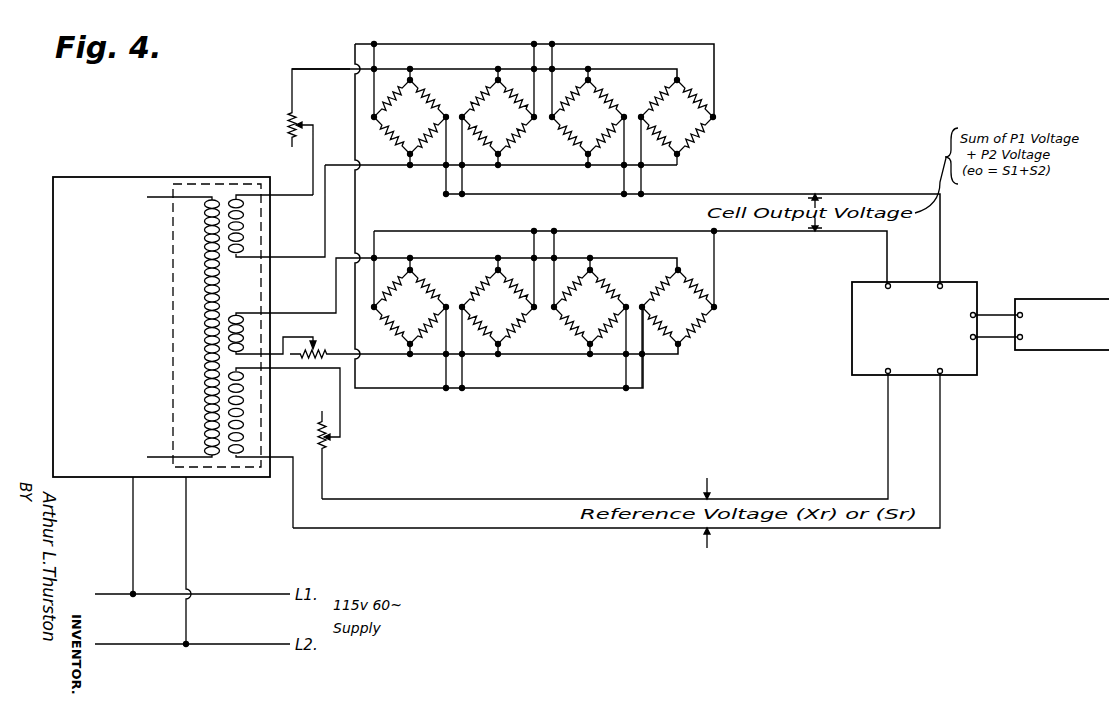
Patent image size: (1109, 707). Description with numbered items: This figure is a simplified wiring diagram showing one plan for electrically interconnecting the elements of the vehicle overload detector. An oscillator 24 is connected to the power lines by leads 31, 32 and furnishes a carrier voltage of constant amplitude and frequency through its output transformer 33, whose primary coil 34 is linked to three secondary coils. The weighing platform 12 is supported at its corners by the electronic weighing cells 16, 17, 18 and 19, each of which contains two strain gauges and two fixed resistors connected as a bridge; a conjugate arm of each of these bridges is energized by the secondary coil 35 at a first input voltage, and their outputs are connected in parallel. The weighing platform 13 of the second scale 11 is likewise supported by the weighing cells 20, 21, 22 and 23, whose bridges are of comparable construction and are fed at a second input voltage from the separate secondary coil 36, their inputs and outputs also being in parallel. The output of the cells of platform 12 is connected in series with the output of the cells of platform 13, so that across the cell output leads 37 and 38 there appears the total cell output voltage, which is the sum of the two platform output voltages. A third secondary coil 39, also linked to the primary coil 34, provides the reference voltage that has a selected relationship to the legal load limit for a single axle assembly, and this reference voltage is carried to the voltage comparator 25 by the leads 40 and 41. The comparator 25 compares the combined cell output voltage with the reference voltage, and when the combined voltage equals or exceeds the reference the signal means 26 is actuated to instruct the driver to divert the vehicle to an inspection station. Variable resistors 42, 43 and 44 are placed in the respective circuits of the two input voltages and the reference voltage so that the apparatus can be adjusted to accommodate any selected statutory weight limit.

The electronic scale 11 is at (858, 72).
The weighing platform 12 is at (778, 392).
The weighing platform 13 is at (537, 119).
The weighing cell 16 is at (395, 333).
The weighing cell 17 is at (505, 333).
The weighing cell 18 is at (572, 332).
The weighing cell 19 is at (696, 324).
The weighing cell 20 is at (424, 100).
The weighing cell 21 is at (484, 99).
The weighing cell 22 is at (602, 99).
The weighing cell 23 is at (656, 99).
The oscillator 24 is at (107, 193).
The voltage comparator 25 is at (907, 290).
The signal means 26 is at (1057, 298).
The lead 31 is at (131, 520).
The lead 32 is at (189, 520).
The output transformer 33 is at (200, 183).
The primary coil 34 is at (205, 233).
The secondary coil 35 is at (243, 331).
The secondary coil 36 is at (243, 235).
The cell output lead 37 is at (843, 194).
The cell output lead 38 is at (853, 232).
The secondary coil 39 is at (243, 403).
The lead 40 is at (558, 499).
The lead 41 is at (557, 529).
The variable resistor 42 is at (323, 348).
The variable resistor 43 is at (299, 122).
The variable resistor 44 is at (318, 426).